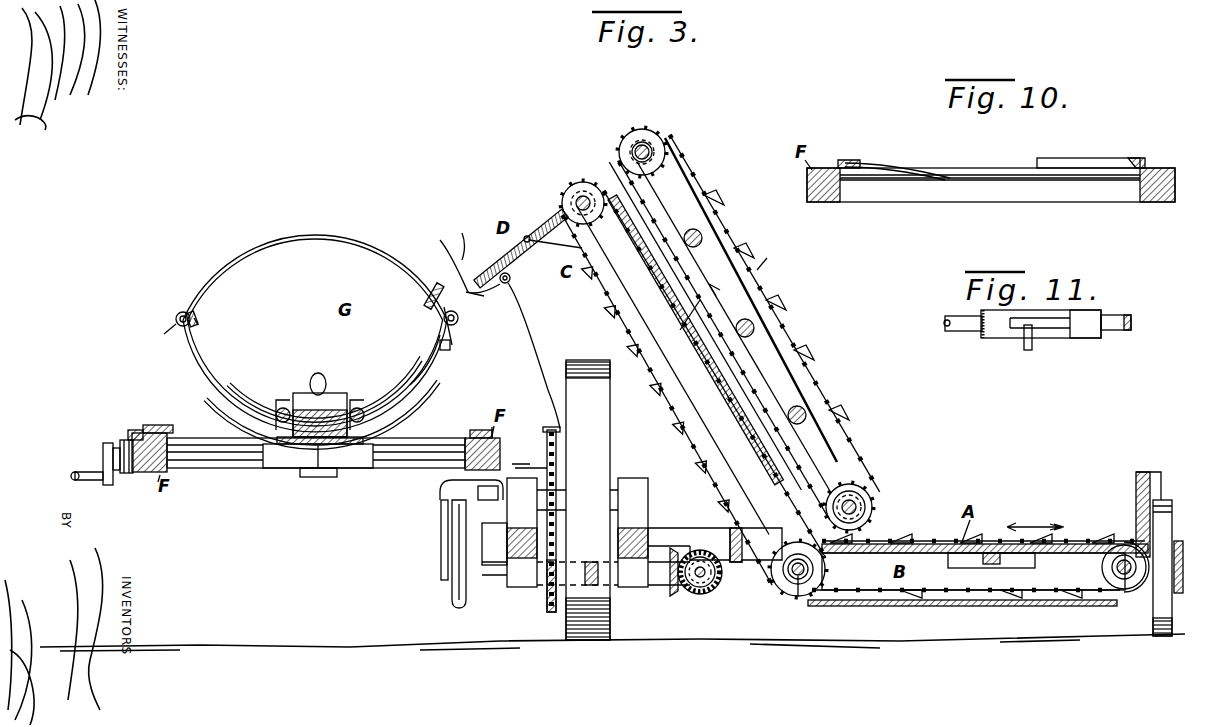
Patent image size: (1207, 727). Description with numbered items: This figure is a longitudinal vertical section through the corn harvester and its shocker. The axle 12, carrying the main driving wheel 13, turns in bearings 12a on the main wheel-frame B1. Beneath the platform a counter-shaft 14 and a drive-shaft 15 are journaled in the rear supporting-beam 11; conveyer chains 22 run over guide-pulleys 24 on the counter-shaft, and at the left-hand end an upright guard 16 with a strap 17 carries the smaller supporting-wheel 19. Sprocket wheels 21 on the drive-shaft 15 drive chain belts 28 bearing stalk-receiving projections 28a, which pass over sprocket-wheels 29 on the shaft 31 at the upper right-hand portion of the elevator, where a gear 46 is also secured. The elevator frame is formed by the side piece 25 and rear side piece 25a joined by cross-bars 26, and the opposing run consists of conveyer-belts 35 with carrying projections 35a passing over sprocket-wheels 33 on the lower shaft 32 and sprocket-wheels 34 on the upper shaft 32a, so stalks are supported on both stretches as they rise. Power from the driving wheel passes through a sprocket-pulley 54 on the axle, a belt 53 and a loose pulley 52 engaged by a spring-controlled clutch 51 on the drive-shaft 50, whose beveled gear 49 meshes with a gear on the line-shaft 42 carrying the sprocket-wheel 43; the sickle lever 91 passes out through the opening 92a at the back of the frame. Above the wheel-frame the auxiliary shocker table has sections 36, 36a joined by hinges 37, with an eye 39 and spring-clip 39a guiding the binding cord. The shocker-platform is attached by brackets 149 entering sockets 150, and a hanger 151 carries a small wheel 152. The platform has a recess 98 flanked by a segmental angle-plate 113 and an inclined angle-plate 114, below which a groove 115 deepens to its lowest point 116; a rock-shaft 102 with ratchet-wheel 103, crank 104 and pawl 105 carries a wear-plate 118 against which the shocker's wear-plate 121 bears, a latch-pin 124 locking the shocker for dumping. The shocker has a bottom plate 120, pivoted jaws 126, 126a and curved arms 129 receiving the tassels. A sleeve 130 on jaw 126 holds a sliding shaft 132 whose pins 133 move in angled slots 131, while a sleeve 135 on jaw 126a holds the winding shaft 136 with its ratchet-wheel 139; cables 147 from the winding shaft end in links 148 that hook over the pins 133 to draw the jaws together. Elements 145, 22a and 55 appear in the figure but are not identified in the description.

In FIG. 3, the ropes, cables, or chains 147 is at (326, 238).
In FIG. 3, the upwardly-curved arm 129 is at (236, 408).
In FIG. 3, the shocker jaw 126a is at (236, 388).
In FIG. 3, the shocker jaw 126 is at (428, 342).
In FIG. 3, the ratchet-wheel 139 is at (184, 312).
In FIG. 3, the sleeve 135 is at (200, 323).
In FIG. 3, the shaft 136 is at (168, 330).
In FIG. 3, the links 148 is at (442, 315).
In FIG. 3, the shaft 132 is at (453, 285).
In FIG. 11, the shaft 132 is at (960, 331).
In FIG. 3, the sleeve 130 is at (450, 344).
In FIG. 11, the sleeve 130 is at (1005, 330).
In FIG. 3, the bottom plate or board 120 is at (320, 415).
In FIG. 3, the boss 145 is at (327, 388).
In FIG. 3, the spring-controlled latch-pin 124 is at (283, 407).
In FIG. 3, the wear-plate 118 is at (366, 440).
In FIG. 3, the rock-shaft 102 is at (316, 453).
In FIG. 3, the wear-plate 121 is at (318, 460).
In FIG. 3, the angle-plate 114 is at (478, 429).
In FIG. 10, the angle-plate 114 is at (852, 160).
In FIG. 3, the segmental angle-plate 113 is at (165, 428).
In FIG. 10, the segmental angle-plate 113 is at (1142, 157).
In FIG. 3, the ratchet-wheel 103 is at (134, 432).
In FIG. 3, the pawl 105 is at (125, 475).
In FIG. 3, the crank 104 is at (90, 472).
In FIG. 3, the auxiliary shocker section 36a is at (541, 224).
In FIG. 3, the eye 39 is at (510, 281).
In FIG. 3, the hinges 37 is at (528, 244).
In FIG. 3, the auxiliary shocker section 36 is at (467, 246).
In FIG. 3, the spring-clip 39a is at (484, 298).
In FIG. 3, the gear 46 is at (540, 368).
In FIG. 3, the sprocket-wheels 29 is at (584, 182).
In FIG. 3, the shaft 31 is at (570, 197).
In FIG. 3, the sprocket-wheels 34 is at (664, 148).
In FIG. 3, the shaft 32a is at (643, 144).
In FIG. 3, the shaft 32 is at (862, 504).
In FIG. 3, the sprocket-wheels 33 is at (855, 492).
In FIG. 3, the chain belts 28 is at (613, 304).
In FIG. 3, the side piece 25 is at (650, 320).
In FIG. 3, the rear side piece 25a is at (707, 305).
In FIG. 3, the cross-bars 26 is at (712, 226).
In FIG. 3, the conveyer-belts 35 is at (764, 283).
In FIG. 3, the carrying projections 35a is at (767, 257).
In FIG. 3, the projections 28a is at (700, 448).
In FIG. 3, the guide-pulleys 24 is at (740, 420).
In FIG. 3, the main or driving wheel 13 is at (588, 500).
In FIG. 3, the sprocket-pulley 54 is at (547, 438).
In FIG. 3, the belt 53 is at (529, 461).
In FIG. 3, the pulley 52 is at (547, 590).
In FIG. 3, the bearings 12a is at (576, 532).
In FIG. 3, the axle 12 is at (618, 478).
In FIG. 3, the drive-shaft 50 is at (645, 584).
In FIG. 3, the spring-controlled clutch 51 is at (592, 561).
In FIG. 3, the sockets 150 is at (494, 544).
In FIG. 3, the small wheel 152 is at (459, 590).
In FIG. 3, the hanger 151 is at (480, 491).
In FIG. 3, the brackets 149 is at (440, 486).
In FIG. 3, the line-shaft 42 is at (701, 578).
In FIG. 3, the sprocket-wheel 43 is at (702, 560).
In FIG. 3, the beveled gear 49 is at (673, 593).
In FIG. 3, the main wheel-frame B1 is at (715, 530).
In FIG. 3, the sprocket wheels 21 is at (780, 582).
In FIG. 3, the drive-shaft 15 is at (800, 596).
In FIG. 3, the conveyer chains 22 is at (996, 538).
In FIG. 3, the flights 22a is at (900, 538).
In FIG. 3, the lever 91 is at (1000, 562).
In FIG. 3, the opening 92a is at (978, 566).
In FIG. 3, the rear supporting-beam 11 is at (985, 567).
In FIG. 3, the plate 55 is at (1070, 606).
In FIG. 3, the counter-shaft 14 is at (1126, 590).
In FIG. 3, the upright guard 16 is at (1134, 488).
In FIG. 3, the supporting-wheel 19 is at (1172, 530).
In FIG. 3, the strap 17 is at (1190, 567).
In FIG. 10, the recess 98 is at (998, 176).
In FIG. 10, the groove 115 is at (900, 182).
In FIG. 10, the groove low point 116 is at (957, 182).
In FIG. 11, the angled slot 131 is at (1075, 335).
In FIG. 11, the pins 133 is at (1028, 351).